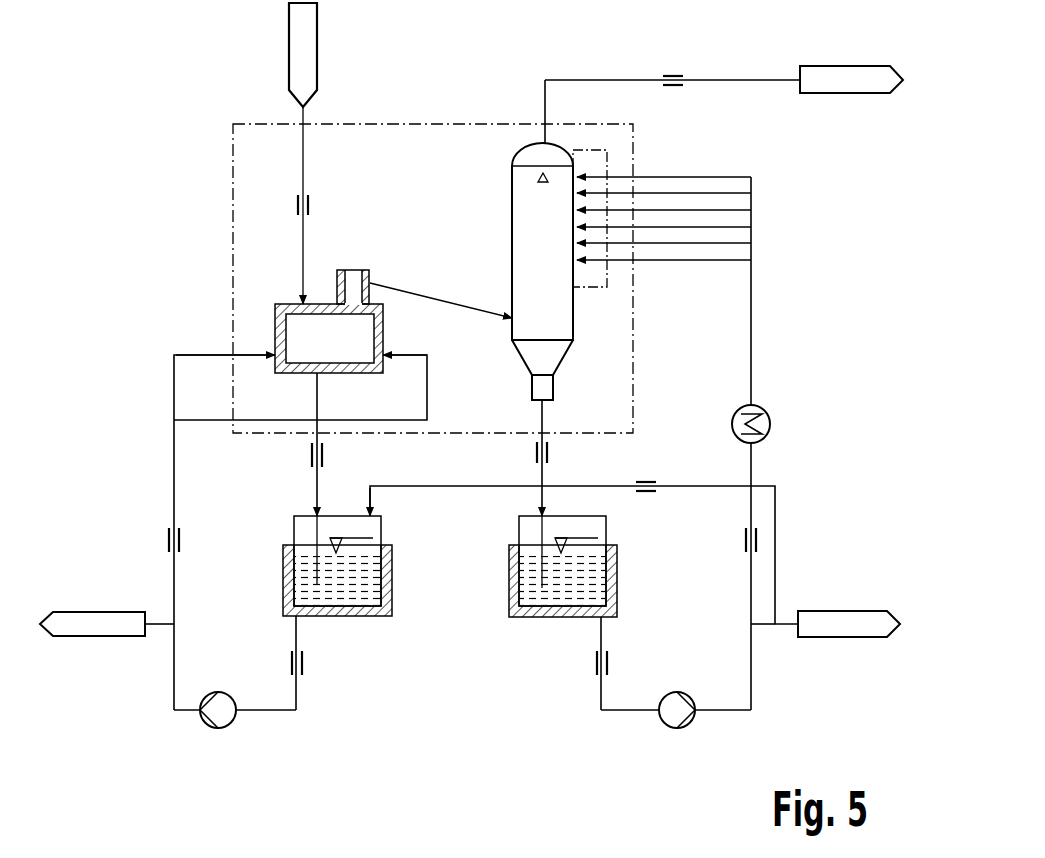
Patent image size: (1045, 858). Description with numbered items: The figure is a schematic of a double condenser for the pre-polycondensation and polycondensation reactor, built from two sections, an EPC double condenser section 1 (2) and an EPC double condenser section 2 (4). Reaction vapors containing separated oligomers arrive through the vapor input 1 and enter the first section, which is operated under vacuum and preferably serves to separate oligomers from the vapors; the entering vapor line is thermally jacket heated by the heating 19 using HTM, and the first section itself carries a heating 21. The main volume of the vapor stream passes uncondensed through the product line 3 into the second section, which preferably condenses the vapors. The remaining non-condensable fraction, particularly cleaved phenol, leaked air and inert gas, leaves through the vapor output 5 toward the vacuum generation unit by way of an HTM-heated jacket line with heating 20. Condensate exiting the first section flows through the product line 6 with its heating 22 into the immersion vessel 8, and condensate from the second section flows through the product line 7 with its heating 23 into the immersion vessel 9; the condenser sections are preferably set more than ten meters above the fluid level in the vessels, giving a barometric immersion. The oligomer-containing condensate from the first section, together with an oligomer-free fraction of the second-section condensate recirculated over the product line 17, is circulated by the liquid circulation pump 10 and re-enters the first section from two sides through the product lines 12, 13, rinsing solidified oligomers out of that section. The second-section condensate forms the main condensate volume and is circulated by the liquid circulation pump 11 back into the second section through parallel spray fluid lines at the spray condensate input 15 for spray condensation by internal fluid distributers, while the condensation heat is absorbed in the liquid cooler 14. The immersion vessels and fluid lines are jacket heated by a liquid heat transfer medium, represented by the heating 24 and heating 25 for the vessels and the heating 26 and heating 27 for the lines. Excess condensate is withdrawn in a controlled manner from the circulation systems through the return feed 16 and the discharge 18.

The vapor input 1 is at (317, 45).
The EPC double condenser section 1 2 is at (285, 315).
The product line 3 is at (447, 300).
The EPC double condenser section 2 4 is at (512, 217).
The vapor output 5 is at (838, 66).
The product line 6 is at (317, 485).
The product line 7 is at (545, 410).
The immersion vessel 8 is at (352, 595).
The immersion vessel 9 is at (570, 595).
The liquid circulation pump 10 is at (218, 692).
The liquid circulation pump 11 is at (677, 692).
The product line 12 is at (174, 383).
The product line 13 is at (427, 383).
The liquid cooler 14 is at (770, 422).
The spray condensate input 15 is at (607, 160).
The return feed 16 is at (843, 611).
The product line 17 is at (443, 488).
The discharge 18 is at (100, 612).
The heating for the product line 19 is at (310, 205).
The heating for the product line 20 is at (672, 76).
The heating for section 1 21 is at (385, 319).
The heating for the product line 22 is at (325, 453).
The heating for the product line 23 is at (550, 452).
The heating for the immersion vessel 24 is at (392, 578).
The heating for the immersion vessel 25 is at (617, 578).
The heating for the product line 26 is at (182, 540).
The heating for the product line 27 is at (743, 540).